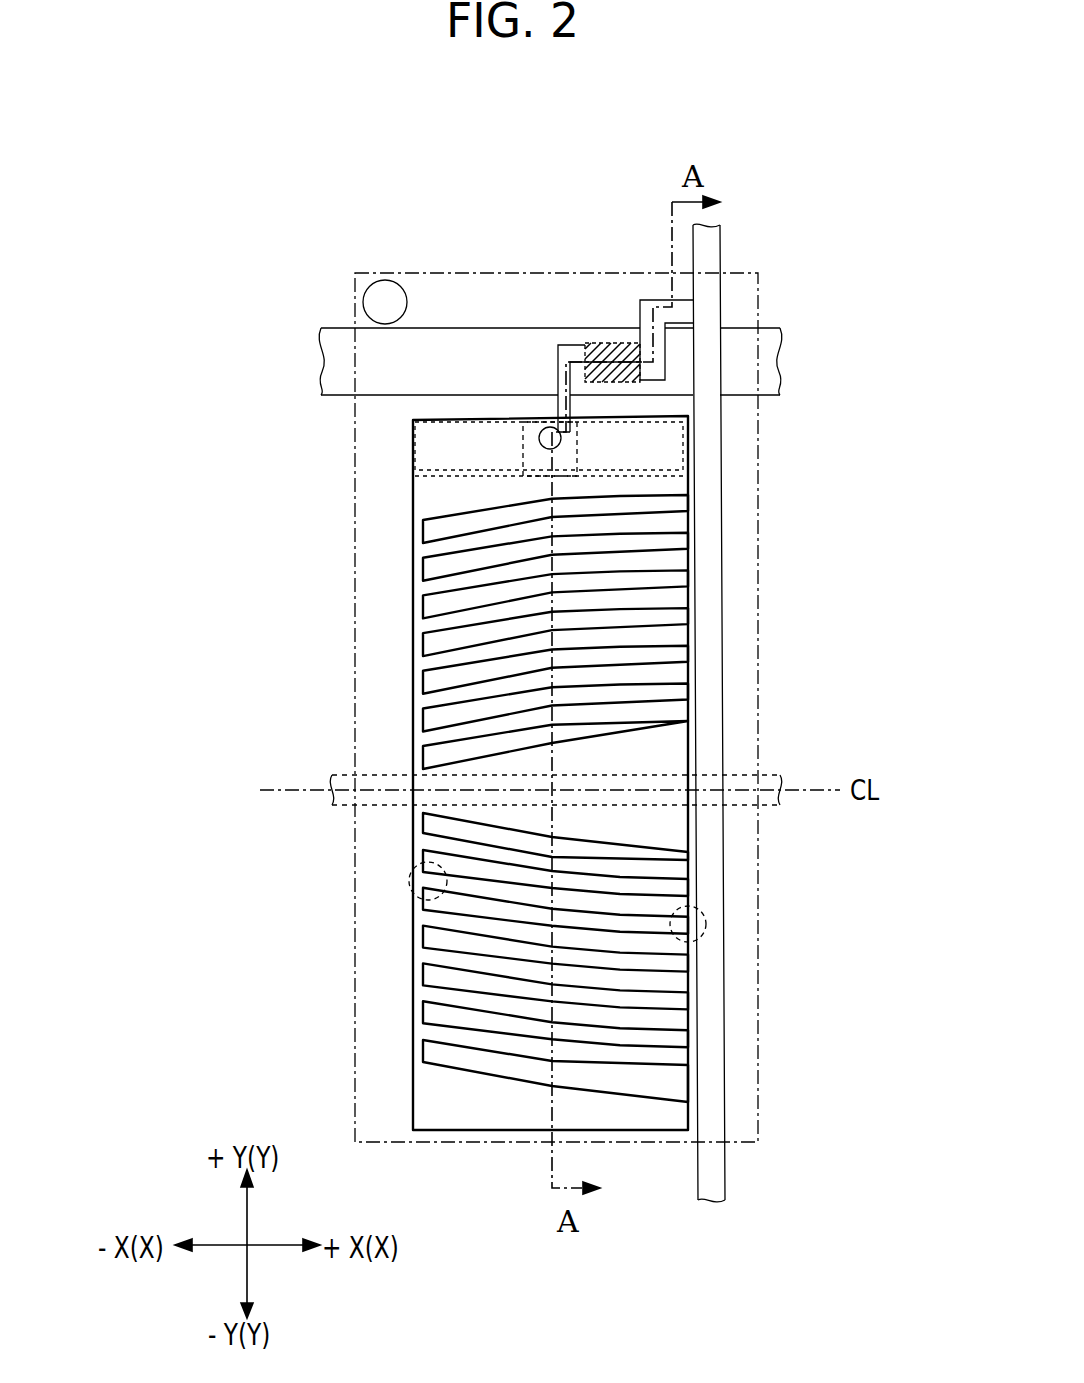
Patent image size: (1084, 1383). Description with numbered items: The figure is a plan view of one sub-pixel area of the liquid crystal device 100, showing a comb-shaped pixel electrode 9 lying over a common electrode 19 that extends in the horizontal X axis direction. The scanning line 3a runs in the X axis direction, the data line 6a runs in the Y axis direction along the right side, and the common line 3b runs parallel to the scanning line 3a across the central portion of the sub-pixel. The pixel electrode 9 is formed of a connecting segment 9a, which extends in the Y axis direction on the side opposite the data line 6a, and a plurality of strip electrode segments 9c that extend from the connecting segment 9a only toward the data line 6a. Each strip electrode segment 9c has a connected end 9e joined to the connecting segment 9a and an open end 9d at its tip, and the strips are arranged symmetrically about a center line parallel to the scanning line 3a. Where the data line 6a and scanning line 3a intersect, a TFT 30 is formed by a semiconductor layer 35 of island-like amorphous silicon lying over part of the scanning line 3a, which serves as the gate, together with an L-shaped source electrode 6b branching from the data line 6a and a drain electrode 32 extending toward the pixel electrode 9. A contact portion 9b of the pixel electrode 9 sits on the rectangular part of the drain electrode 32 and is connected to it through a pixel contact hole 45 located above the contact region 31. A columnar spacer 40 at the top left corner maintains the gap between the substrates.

The liquid crystal device 100 is at (842, 233).
The TFT 30 is at (578, 292).
The semiconductor layer 35 is at (603, 340).
The source electrode 6b is at (645, 317).
The pixel contact hole 45 is at (545, 428).
The drain electrode 32 is at (560, 357).
The columnar spacer 40 is at (385, 293).
The scanning line 3a is at (332, 355).
The common line 3b is at (345, 805).
The contact region 31 is at (430, 445).
The pixel electrode 9 is at (402, 632).
The connecting segment 9a is at (413, 600).
The contact portion 9b is at (578, 460).
The strip electrode segments 9c is at (462, 656).
The open end 9d is at (708, 924).
The connected end 9e is at (409, 882).
The common electrode 19 is at (355, 957).
The data line 6a is at (712, 1180).